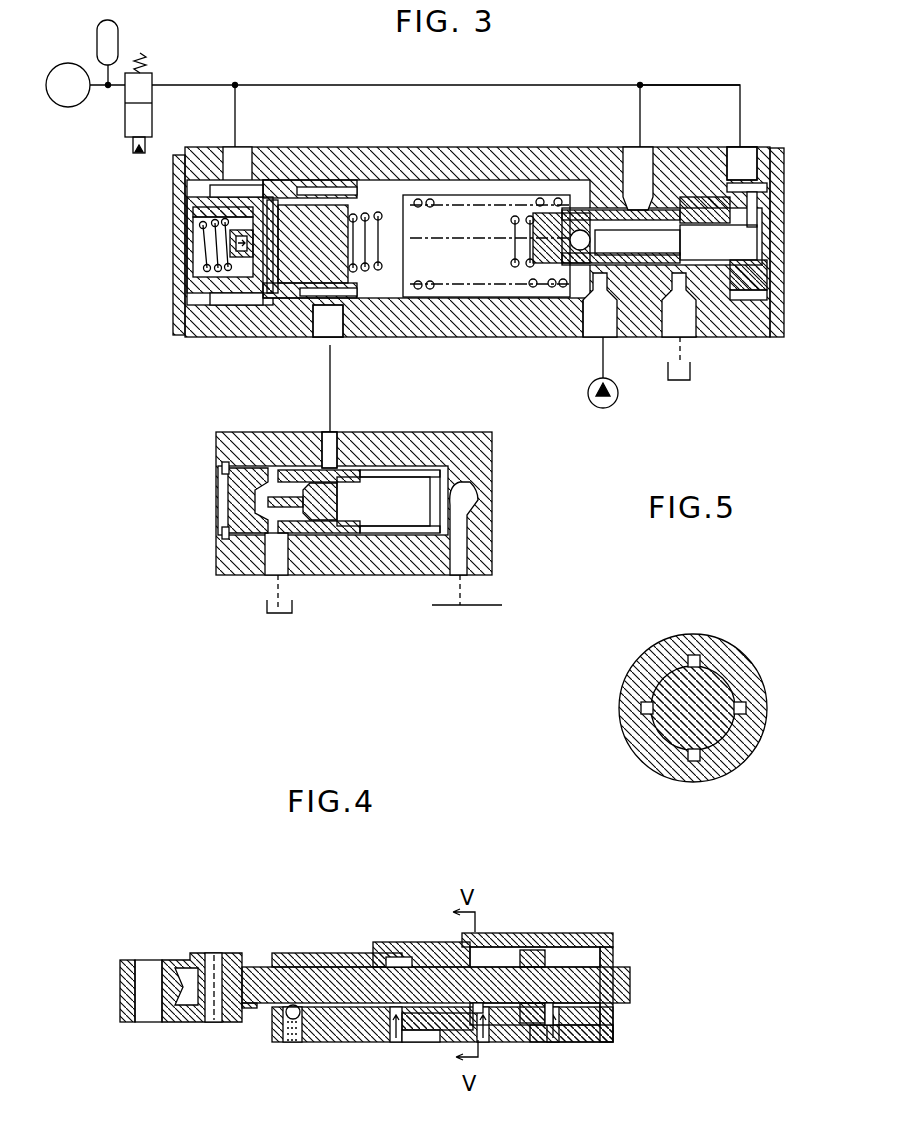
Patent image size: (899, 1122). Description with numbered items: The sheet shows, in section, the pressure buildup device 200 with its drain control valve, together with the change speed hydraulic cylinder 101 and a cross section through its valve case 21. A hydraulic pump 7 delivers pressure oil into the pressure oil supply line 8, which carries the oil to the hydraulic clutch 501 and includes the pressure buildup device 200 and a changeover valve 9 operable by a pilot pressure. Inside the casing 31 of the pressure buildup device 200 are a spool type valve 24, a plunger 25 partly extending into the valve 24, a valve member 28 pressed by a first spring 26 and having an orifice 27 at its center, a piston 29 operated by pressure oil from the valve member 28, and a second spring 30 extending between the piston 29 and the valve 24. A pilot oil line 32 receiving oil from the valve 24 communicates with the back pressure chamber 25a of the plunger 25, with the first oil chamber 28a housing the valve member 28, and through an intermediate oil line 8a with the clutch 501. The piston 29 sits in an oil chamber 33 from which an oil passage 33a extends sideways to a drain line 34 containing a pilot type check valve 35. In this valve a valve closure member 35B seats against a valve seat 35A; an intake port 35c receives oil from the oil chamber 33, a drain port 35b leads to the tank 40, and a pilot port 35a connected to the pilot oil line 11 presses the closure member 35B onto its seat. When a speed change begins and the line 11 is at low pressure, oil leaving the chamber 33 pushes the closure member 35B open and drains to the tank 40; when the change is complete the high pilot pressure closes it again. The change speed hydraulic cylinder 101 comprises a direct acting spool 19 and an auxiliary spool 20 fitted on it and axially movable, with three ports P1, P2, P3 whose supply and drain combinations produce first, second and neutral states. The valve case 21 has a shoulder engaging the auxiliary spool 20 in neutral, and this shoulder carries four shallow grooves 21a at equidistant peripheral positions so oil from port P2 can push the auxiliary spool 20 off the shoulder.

In FIG. 3, the hydraulic clutch 501 is at (56, 67).
In FIG. 3, the changeover valve 9 is at (123, 125).
In FIG. 3, the intermediate oil line 8a is at (211, 85).
In FIG. 3, the pilot oil line 32 is at (676, 76).
In FIG. 3, the pressure buildup device 200 is at (765, 129).
In FIG. 3, the valve member 28 is at (178, 275).
In FIG. 3, the first oil chamber 28a is at (195, 212).
In FIG. 3, the first spring 26 is at (203, 248).
In FIG. 3, the orifice 27 is at (237, 257).
In FIG. 3, the piston 29 is at (325, 190).
In FIG. 3, the second spring 30 is at (520, 192).
In FIG. 3, the spool type valve 24 is at (606, 195).
In FIG. 3, the plunger 25 is at (713, 150).
In FIG. 3, the back pressure chamber 25a is at (745, 320).
In FIG. 3, the oil chamber 33 is at (279, 307).
In FIG. 3, the oil passage 33a is at (341, 324).
In FIG. 3, the casing 31 is at (545, 340).
In FIG. 3, the pressure oil supply line 8 is at (603, 360).
In FIG. 3, the hydraulic pump 7 is at (619, 404).
In FIG. 3, the pilot type check valve 35 is at (498, 477).
In FIG. 3, the intake port 35c is at (334, 450).
In FIG. 3, the pilot port 35a is at (462, 548).
In FIG. 3, the drain port 35b is at (268, 560).
In FIG. 3, the valve seat 35A is at (323, 567).
In FIG. 3, the valve closure member 35B is at (350, 547).
In FIG. 3, the drain line 34 is at (272, 593).
In FIG. 3, the tank 40 is at (263, 616).
In FIG. 3, the pilot oil line 11 is at (480, 604).
In FIG. 5, the direct acting spool 19 is at (656, 664).
In FIG. 4, the direct acting spool 19 is at (363, 952).
In FIG. 5, the valve case 21 is at (733, 771).
In FIG. 4, the valve case 21 is at (418, 940).
In FIG. 5, the shallow grooves 21a is at (742, 701).
In FIG. 4, the shallow grooves 21a is at (478, 1023).
In FIG. 5, the change speed hydraulic cylinder 101 is at (697, 629).
In FIG. 4, the change speed hydraulic cylinder 101 is at (569, 922).
In FIG. 4, the auxiliary spool 20 is at (505, 940).
In FIG. 4, the port P1 is at (395, 1045).
In FIG. 4, the port P2 is at (486, 1045).
In FIG. 4, the port P3 is at (552, 1043).